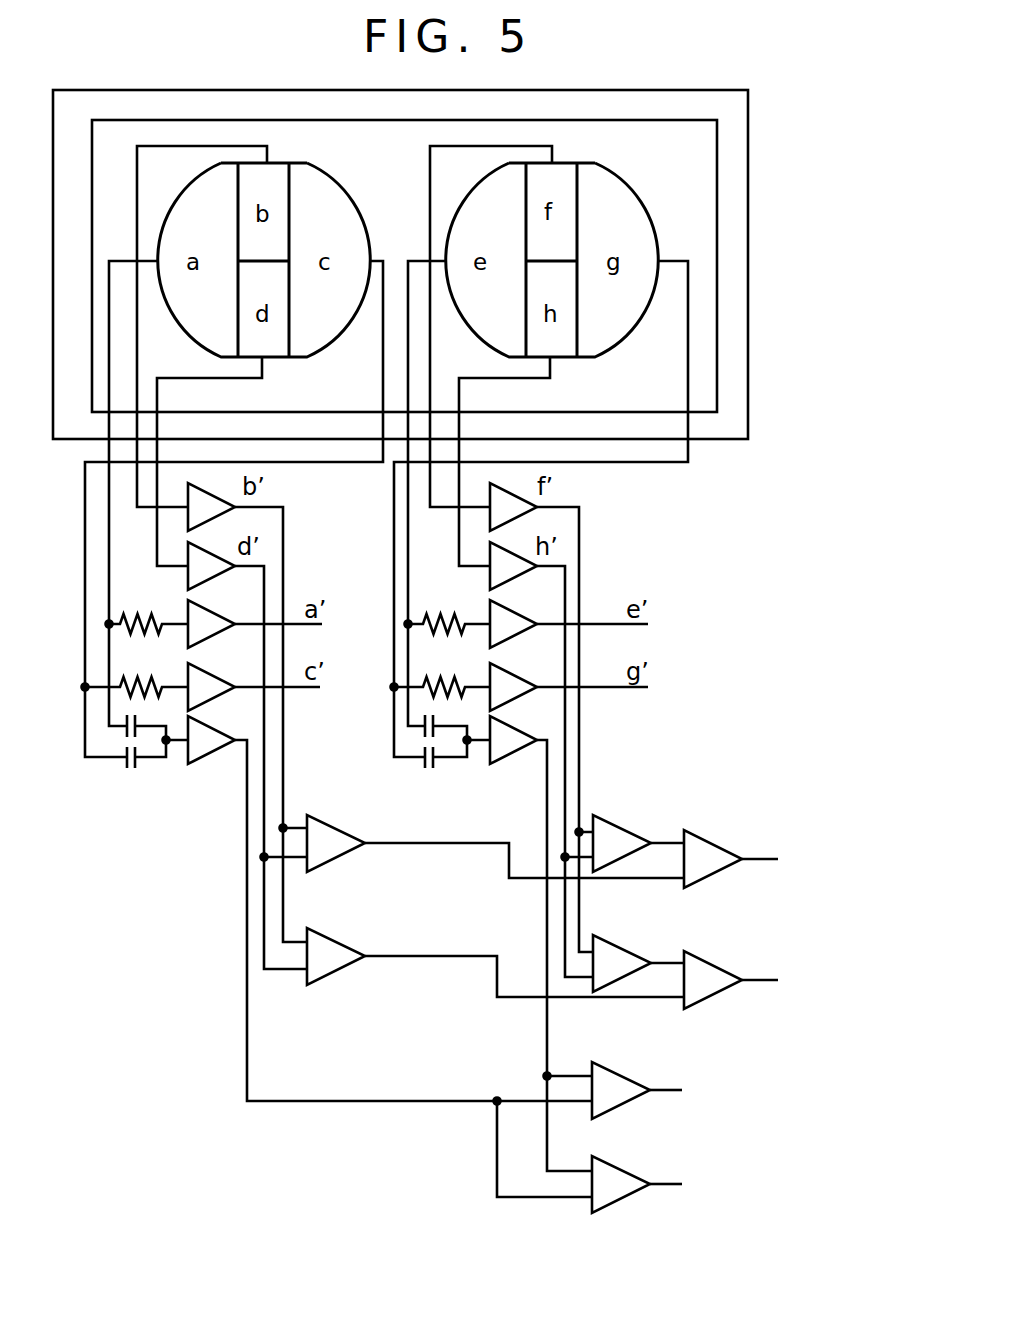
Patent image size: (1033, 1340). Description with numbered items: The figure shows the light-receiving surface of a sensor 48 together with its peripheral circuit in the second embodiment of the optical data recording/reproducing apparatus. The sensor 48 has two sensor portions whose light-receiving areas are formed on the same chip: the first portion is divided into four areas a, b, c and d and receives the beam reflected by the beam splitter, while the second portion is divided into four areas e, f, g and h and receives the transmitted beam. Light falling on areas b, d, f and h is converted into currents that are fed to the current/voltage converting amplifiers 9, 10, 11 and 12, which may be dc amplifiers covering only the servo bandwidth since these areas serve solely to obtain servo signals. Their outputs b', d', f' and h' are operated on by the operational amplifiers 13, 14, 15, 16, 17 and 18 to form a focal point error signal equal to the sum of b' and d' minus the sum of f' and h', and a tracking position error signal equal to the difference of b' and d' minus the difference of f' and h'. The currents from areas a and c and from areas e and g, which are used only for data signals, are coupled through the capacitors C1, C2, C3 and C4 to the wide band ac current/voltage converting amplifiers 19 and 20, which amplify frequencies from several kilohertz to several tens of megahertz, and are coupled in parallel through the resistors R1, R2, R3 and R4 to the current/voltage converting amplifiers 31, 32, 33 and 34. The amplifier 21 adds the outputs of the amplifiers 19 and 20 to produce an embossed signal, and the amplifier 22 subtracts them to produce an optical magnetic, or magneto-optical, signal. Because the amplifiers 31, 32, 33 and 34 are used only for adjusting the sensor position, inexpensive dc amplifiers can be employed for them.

The sensor 48 is at (404, 252).
The current/voltage converting amplifier 9 is at (423, 338).
The current/voltage converting amplifier 10 is at (247, 755).
The current/voltage converting amplifier 11 is at (541, 717).
The current/voltage converting amplifier 12 is at (541, 759).
The operational amplifier 13 is at (495, 846).
The operational amplifier 14 is at (638, 843).
The operational amplifier 15 is at (788, 850).
The operational amplifier 16 is at (495, 962).
The operational amplifier 17 is at (638, 963).
The operational amplifier 18 is at (788, 970).
The current/voltage converting amplifier 19 is at (390, 956).
The current/voltage converting amplifier 20 is at (541, 943).
The operational amplifier 21 is at (737, 1090).
The operational amplifier 22 is at (739, 1184).
The current/voltage converting amplifier 31 is at (255, 624).
The current/voltage converting amplifier 32 is at (254, 687).
The current/voltage converting amplifier 33 is at (569, 624).
The current/voltage converting amplifier 34 is at (569, 687).
The resistor R1 is at (143, 612).
The resistor R2 is at (150, 680).
The resistor R3 is at (450, 612).
The resistor R4 is at (426, 681).
The capacitor C1 is at (141, 740).
The capacitor C2 is at (126, 770).
The capacitor C3 is at (442, 738).
The capacitor C4 is at (424, 770).